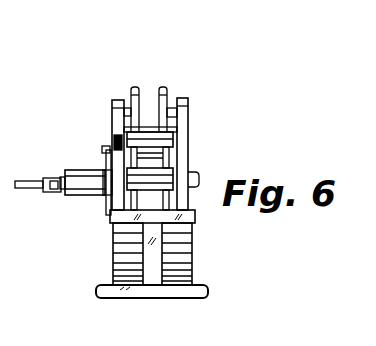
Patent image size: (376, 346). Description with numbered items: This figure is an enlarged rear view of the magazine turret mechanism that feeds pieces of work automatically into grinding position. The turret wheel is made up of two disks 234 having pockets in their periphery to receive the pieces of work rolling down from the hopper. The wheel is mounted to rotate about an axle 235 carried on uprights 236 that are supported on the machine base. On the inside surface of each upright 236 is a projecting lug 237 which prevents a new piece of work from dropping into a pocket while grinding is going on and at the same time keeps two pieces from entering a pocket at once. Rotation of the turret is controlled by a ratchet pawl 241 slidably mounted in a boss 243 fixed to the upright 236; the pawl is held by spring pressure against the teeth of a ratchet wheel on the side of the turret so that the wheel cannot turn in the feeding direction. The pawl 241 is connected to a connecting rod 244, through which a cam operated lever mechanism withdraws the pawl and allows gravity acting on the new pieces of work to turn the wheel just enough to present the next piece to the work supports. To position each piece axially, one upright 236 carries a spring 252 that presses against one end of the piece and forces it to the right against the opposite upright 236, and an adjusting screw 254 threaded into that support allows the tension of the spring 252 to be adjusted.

The disks 234 is at (163, 88).
The axle 235 is at (201, 176).
The uprights 236 is at (112, 114).
The projecting lug 237 is at (123, 110).
The ratchet pawl 241 is at (62, 196).
The boss 243 is at (90, 196).
The connecting rod 244 is at (34, 190).
The spring 252 is at (106, 165).
The adjusting screw 254 is at (102, 149).